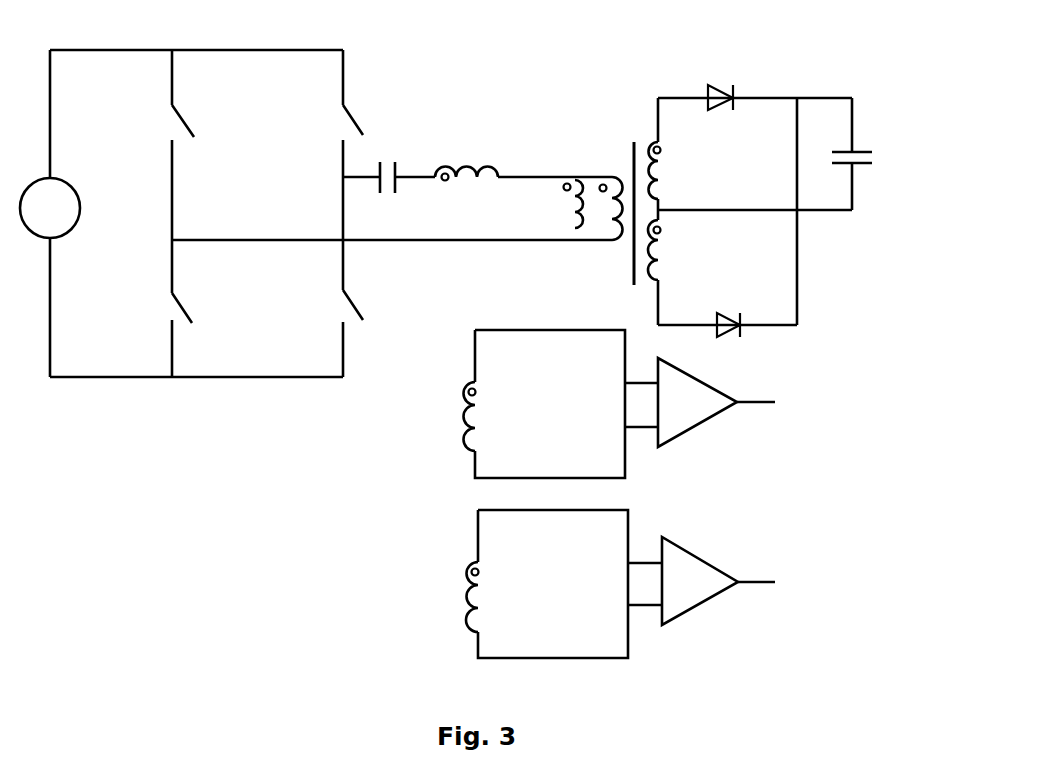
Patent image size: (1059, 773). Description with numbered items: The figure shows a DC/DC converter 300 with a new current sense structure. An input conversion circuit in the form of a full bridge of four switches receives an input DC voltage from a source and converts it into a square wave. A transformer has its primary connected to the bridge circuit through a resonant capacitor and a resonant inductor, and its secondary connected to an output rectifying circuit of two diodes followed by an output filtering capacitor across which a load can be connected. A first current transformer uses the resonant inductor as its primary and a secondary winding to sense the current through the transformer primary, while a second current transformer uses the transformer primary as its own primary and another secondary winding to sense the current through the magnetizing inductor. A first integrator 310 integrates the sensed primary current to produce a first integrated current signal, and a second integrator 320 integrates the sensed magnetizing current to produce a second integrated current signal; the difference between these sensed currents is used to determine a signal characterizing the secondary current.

The DC/DC converter 300 is at (670, 47).
The first integrator INT1 310 is at (702, 433).
The second integrator INT2 320 is at (702, 611).